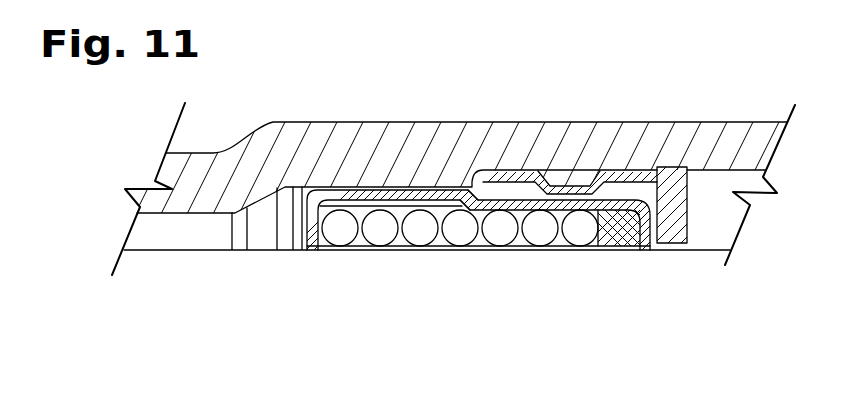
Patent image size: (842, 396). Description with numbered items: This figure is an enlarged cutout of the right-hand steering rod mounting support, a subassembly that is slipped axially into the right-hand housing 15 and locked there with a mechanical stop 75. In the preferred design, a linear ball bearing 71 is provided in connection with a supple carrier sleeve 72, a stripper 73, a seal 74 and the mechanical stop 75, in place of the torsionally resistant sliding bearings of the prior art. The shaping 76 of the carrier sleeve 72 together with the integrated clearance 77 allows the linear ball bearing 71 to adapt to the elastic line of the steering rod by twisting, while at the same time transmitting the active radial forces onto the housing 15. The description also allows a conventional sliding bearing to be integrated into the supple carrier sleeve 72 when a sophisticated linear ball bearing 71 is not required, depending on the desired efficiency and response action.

The housing 15 is at (300, 121).
The linear ball bearing 71 is at (622, 228).
The supple carrier sleeve 72 is at (357, 190).
The stripper 73 is at (630, 228).
The seal 74 is at (567, 172).
The mechanical stop 75 is at (670, 185).
The shaping 76 is at (477, 182).
The integrated clearance 77 is at (567, 228).